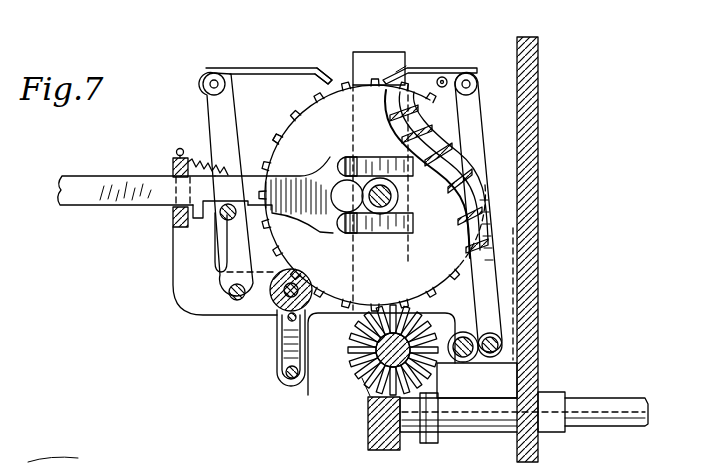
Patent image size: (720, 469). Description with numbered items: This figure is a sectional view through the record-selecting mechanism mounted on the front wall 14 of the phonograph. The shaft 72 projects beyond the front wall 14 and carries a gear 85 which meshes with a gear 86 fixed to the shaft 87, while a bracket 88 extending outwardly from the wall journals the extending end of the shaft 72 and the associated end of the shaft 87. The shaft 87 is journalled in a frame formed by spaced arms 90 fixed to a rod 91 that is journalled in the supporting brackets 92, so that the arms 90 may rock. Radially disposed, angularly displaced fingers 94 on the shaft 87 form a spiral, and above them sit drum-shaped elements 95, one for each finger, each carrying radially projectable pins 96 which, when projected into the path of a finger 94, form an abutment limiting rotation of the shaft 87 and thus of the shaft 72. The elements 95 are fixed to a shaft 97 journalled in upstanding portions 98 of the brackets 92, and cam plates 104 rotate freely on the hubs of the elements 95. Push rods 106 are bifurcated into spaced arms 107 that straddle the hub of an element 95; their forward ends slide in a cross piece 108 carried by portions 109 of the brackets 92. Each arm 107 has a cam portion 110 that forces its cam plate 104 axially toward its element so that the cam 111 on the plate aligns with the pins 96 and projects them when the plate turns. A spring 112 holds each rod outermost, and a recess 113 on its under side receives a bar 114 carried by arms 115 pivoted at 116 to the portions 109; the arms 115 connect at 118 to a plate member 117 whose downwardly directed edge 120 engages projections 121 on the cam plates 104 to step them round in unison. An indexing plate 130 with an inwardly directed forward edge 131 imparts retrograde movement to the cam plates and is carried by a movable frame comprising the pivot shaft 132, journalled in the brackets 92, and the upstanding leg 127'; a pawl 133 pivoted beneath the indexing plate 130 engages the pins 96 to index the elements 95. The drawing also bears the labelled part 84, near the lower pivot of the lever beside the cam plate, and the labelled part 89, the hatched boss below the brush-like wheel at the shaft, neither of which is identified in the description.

The front wall 14 is at (538, 131).
The shaft 72 is at (607, 400).
The disc 84 is at (278, 312).
The gear 85 is at (284, 351).
The gear 86 is at (292, 386).
The shaft 87 is at (348, 333).
The bracket 88 is at (438, 440).
The bearing boss 89 is at (388, 450).
The spaced arms 90 is at (447, 371).
The rod 91 is at (472, 335).
The supporting brackets 92 is at (505, 277).
The fingers 94 is at (358, 387).
The elements 95 is at (482, 138).
The projectable pins 96 is at (480, 173).
The shaft 97 is at (398, 199).
The upstanding portions 98 is at (360, 52).
The cam plates 104 is at (300, 149).
The push rods 106 is at (113, 180).
The spaced arms 107 is at (373, 157).
The cross piece 108 is at (173, 220).
The portions 109 is at (178, 279).
The cam portion 110 is at (347, 195).
The cam 111 is at (468, 290).
The spring 112 is at (202, 158).
The recess 113 is at (212, 216).
The bar 114 is at (212, 213).
The arms 115 is at (213, 105).
The pivot 116 is at (229, 300).
The plate member 117 is at (237, 67).
The pivot 118 is at (205, 77).
The downwardly directed edge 120 is at (327, 68).
The projections 121 is at (320, 101).
The upstanding leg 127' is at (518, 85).
The indexing plate 130 is at (415, 64).
The inwardly directed forward edge 131 is at (399, 64).
The pivot shaft 132 is at (502, 338).
The pawl 133 is at (425, 76).